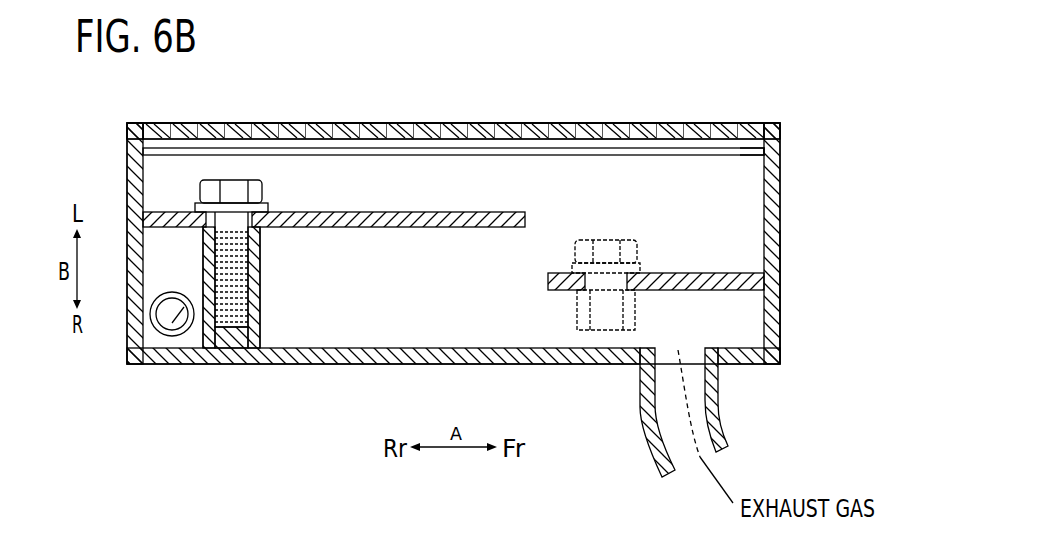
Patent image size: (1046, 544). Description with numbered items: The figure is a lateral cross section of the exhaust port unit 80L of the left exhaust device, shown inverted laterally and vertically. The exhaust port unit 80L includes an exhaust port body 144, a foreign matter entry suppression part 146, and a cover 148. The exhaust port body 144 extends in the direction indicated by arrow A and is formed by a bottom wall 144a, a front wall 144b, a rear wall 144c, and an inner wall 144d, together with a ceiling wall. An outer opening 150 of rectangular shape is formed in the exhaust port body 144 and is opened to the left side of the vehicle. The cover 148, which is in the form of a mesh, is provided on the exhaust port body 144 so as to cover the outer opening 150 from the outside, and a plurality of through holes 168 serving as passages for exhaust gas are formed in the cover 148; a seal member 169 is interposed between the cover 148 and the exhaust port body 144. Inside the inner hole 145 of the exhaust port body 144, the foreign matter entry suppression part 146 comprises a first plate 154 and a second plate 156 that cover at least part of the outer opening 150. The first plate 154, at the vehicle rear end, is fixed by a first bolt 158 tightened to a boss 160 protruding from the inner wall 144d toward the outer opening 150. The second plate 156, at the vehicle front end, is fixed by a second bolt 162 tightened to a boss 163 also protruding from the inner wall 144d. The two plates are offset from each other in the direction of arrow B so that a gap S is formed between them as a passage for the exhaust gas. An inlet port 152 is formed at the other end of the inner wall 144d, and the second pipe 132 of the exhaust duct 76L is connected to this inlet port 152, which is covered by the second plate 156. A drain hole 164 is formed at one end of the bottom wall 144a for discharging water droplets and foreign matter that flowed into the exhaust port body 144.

The exhaust port unit 80L is at (137, 374).
The exhaust port body 144 is at (453, 258).
The bottom wall 144a is at (742, 198).
The front wall 144b is at (775, 240).
The rear wall 144c is at (128, 176).
The inner wall 144d is at (328, 356).
The inner hole 145 is at (423, 327).
The foreign matter entry suppression part 146 is at (384, 178).
The cover 148 is at (640, 123).
The outer opening 150 is at (308, 147).
The inlet port 152 is at (656, 404).
The first plate 154 is at (457, 212).
The second plate 156 is at (673, 275).
The first bolt 158 is at (256, 195).
The boss 160 is at (261, 268).
The second bolt 162 is at (613, 240).
The boss 163 is at (577, 333).
The drain hole 164 is at (173, 337).
The through holes 168 is at (706, 131).
The seal member 169 is at (781, 146).
The second pipe 132 is at (656, 425).
The exhaust duct 76L is at (651, 467).
The gap S is at (573, 82).